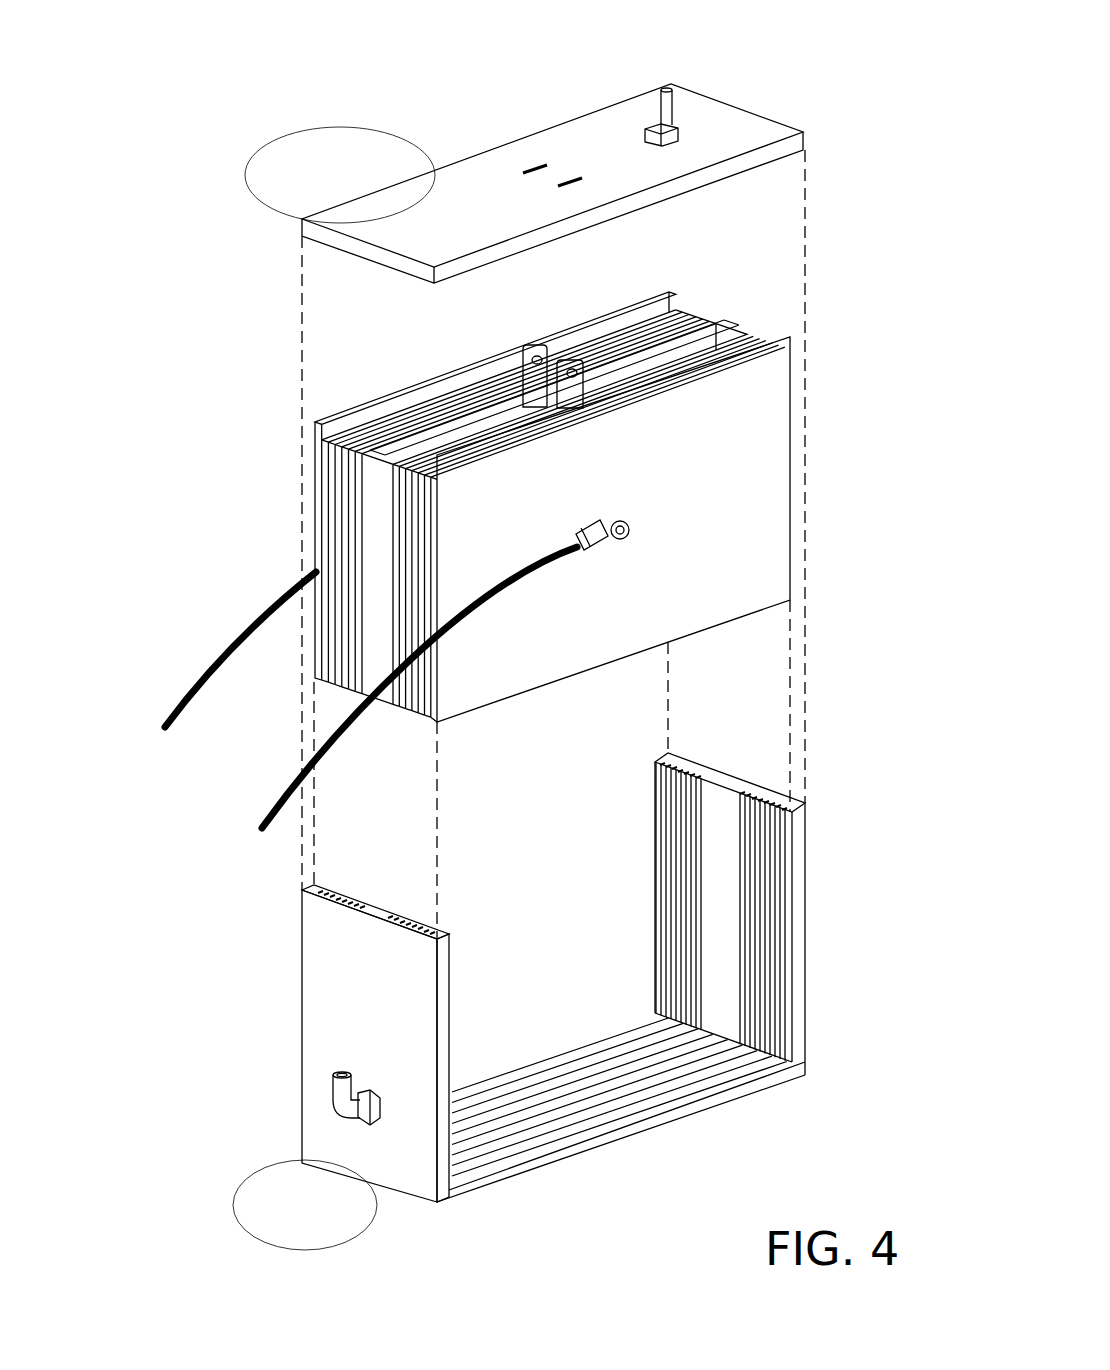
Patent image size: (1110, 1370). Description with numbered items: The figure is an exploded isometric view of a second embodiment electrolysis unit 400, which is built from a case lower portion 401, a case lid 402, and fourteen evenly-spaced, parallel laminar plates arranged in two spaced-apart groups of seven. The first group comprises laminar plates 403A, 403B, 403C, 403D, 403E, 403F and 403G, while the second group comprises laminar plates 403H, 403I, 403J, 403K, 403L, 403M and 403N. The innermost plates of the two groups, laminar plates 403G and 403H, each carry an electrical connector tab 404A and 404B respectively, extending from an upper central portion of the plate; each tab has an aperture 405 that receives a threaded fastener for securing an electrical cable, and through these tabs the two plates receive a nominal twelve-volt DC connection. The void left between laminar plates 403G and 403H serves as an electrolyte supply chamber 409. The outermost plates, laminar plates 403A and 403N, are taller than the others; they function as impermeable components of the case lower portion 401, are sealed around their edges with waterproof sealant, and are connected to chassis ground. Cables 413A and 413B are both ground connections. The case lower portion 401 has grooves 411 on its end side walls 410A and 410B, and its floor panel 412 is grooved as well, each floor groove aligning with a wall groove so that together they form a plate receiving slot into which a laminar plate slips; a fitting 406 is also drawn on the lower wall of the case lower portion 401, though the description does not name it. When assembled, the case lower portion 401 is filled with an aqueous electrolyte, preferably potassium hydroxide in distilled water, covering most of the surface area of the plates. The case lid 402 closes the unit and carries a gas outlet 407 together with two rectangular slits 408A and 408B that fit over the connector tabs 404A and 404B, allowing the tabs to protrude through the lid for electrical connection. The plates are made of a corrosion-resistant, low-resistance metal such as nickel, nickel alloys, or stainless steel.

The electrolysis unit 400 is at (296, 96).
The case lower portion 401 is at (351, 1184).
The case lid 402 is at (405, 195).
The laminar plate 403A is at (447, 603).
The laminar plate 403B is at (432, 578).
The laminar plate 403C is at (425, 557).
The laminar plate 403D is at (417, 525).
The laminar plate 403E is at (410, 493).
The laminar plate 403F is at (377, 457).
The laminar plate 403G is at (335, 418).
The laminar plate 403H is at (712, 330).
The laminar plate 403I is at (705, 321).
The laminar plate 403J is at (698, 319).
The laminar plate 403K is at (691, 316).
The laminar plate 403L is at (684, 313).
The laminar plate 403M is at (677, 310).
The laminar plate 403N is at (669, 292).
The electrical connector tab 404A is at (560, 362).
The electrical connector tab 404B is at (530, 345).
The aperture 405 is at (516, 353).
The coolant fitting 406 is at (343, 1108).
The gas outlet 407 is at (660, 112).
The rectangular slit 408A is at (570, 170).
The rectangular slit 408B is at (535, 158).
The electrolyte supply chamber 409 is at (468, 420).
The end side wall 410A is at (797, 905).
The end side wall 410B is at (358, 977).
The grooves 411 is at (770, 787).
The floor panel 412 is at (640, 1126).
The cable 413A is at (272, 812).
The cable 413B is at (232, 662).